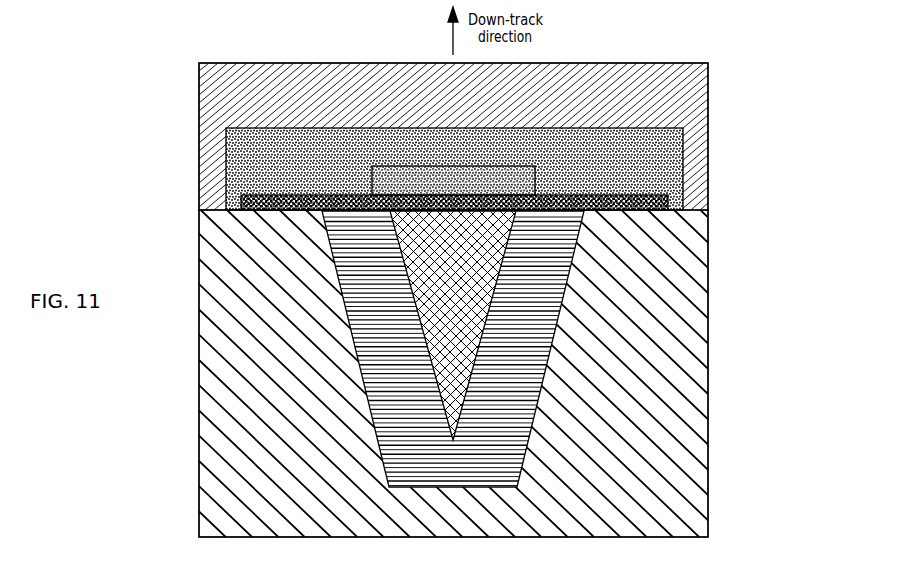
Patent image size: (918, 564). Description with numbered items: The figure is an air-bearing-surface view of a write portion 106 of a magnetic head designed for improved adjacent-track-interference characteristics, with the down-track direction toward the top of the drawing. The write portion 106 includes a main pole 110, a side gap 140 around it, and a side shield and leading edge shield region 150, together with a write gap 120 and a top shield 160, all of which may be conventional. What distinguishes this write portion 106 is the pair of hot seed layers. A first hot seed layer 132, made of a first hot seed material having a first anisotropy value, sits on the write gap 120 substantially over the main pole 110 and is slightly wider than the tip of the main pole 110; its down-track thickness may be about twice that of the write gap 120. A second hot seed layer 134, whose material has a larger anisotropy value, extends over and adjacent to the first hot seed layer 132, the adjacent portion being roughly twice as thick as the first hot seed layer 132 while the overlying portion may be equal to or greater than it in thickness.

The write portion 106 is at (775, 138).
The main pole 110 is at (466, 271).
The write gap 120 is at (313, 209).
The first hot seed layer 132 is at (466, 190).
The second hot seed layer 134 is at (466, 158).
The side gap 140 is at (466, 470).
The side shield and leading edge shield region 150 is at (466, 527).
The top shield 160 is at (466, 110).